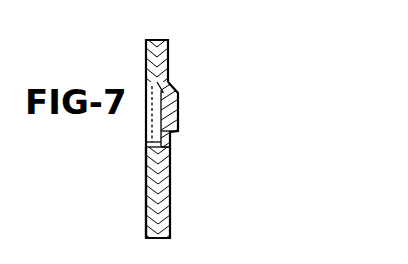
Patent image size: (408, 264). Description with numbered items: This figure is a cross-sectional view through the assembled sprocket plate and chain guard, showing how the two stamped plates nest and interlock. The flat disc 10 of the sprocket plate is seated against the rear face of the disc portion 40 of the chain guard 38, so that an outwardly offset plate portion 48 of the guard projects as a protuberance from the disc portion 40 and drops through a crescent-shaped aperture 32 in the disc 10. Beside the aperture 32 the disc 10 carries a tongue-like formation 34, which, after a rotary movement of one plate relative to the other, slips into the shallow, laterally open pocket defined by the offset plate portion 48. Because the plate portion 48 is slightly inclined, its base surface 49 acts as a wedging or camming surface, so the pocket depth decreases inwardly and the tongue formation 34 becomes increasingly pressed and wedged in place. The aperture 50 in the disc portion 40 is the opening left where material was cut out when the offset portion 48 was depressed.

The disc 10 is at (170, 209).
The crescent-shaped aperture 32 is at (168, 80).
The tongue-like formation 34 is at (171, 146).
The chain guard 38 is at (142, 61).
The disc portion of the guard plate 40 is at (146, 208).
The offset plate portion 48 is at (178, 110).
The base surface of the pocket 49 is at (152, 121).
The aperture 50 is at (146, 159).